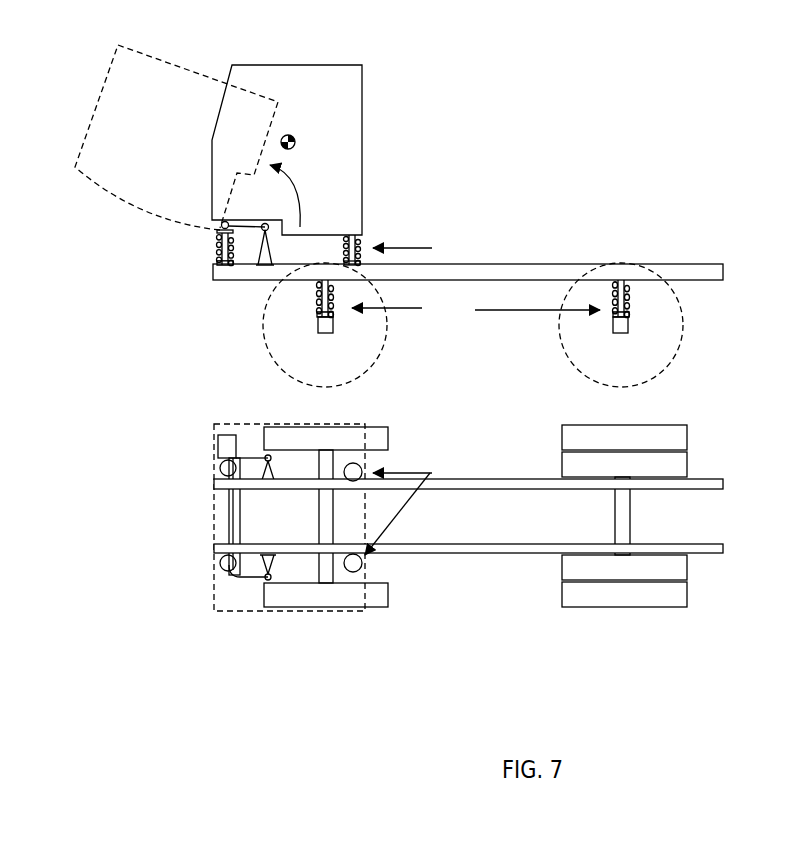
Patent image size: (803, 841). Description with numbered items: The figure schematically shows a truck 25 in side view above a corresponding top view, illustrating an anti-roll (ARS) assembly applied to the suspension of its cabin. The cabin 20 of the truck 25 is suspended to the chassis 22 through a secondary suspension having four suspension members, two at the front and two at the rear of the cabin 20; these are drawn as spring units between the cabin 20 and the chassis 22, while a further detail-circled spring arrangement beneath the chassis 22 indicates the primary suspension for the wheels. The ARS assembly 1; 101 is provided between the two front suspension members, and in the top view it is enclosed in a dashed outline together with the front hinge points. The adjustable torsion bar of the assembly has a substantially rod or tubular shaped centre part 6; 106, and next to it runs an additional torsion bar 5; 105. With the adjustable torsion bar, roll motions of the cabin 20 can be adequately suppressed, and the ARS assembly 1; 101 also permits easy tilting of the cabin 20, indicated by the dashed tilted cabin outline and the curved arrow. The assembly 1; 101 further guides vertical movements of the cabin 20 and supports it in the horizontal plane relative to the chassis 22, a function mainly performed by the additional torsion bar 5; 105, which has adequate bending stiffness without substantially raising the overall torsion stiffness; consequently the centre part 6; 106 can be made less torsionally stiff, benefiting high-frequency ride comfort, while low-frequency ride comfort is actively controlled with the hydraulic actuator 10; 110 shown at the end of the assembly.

The truck 25 is at (542, 113).
The cabin 20 is at (342, 147).
The chassis 22 is at (523, 272).
The ARS assembly 1 is at (207, 417).
The ARS assembly 101 is at (249, 229).
The actuator 10 is at (143, 445).
The actuator 110 is at (225, 447).
The centre part 6 is at (153, 516).
The centre part 106 is at (233, 515).
The additional torsion bar 5 is at (169, 517).
The additional torsion bar 105 is at (237, 540).